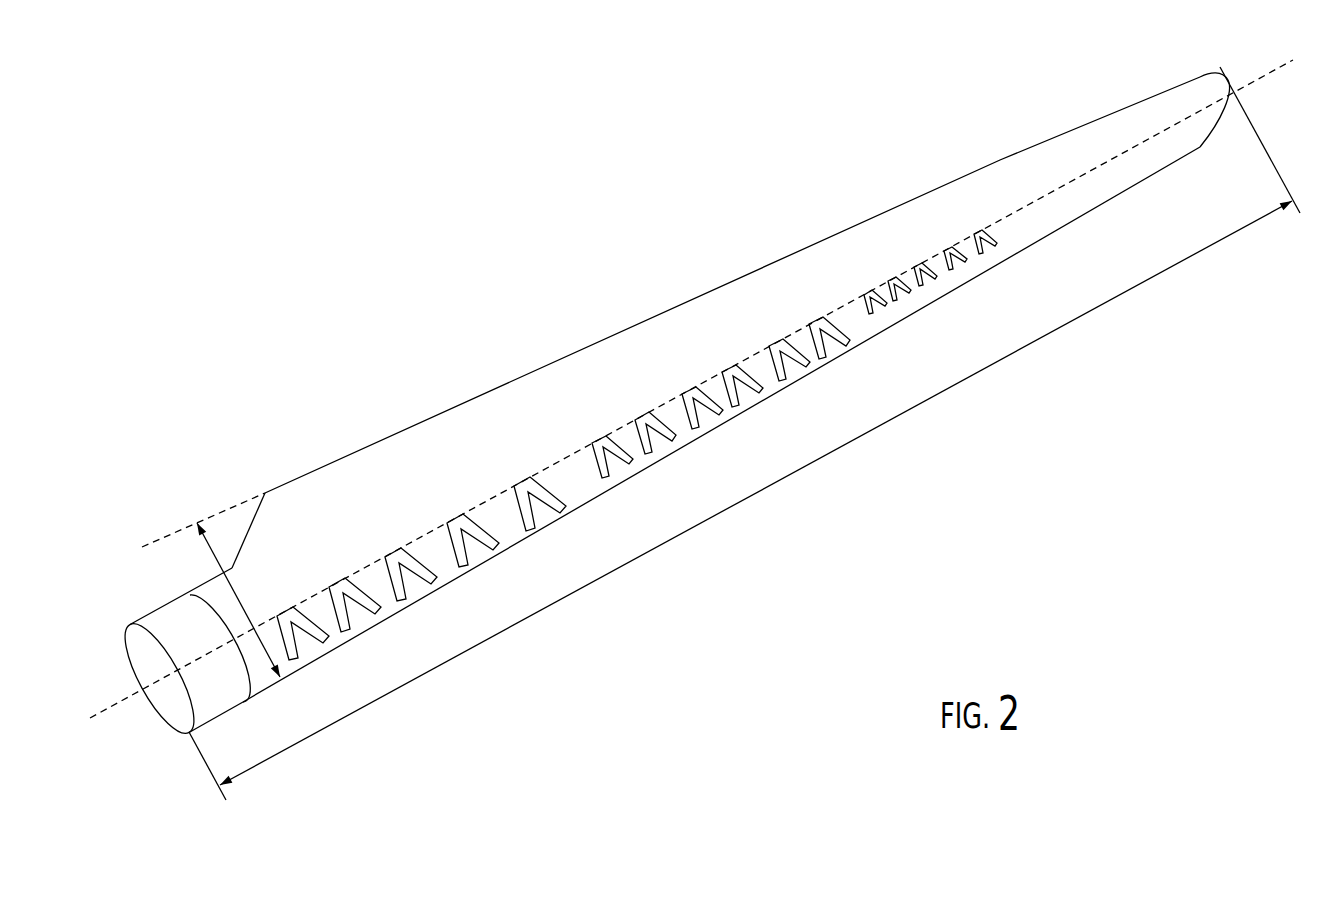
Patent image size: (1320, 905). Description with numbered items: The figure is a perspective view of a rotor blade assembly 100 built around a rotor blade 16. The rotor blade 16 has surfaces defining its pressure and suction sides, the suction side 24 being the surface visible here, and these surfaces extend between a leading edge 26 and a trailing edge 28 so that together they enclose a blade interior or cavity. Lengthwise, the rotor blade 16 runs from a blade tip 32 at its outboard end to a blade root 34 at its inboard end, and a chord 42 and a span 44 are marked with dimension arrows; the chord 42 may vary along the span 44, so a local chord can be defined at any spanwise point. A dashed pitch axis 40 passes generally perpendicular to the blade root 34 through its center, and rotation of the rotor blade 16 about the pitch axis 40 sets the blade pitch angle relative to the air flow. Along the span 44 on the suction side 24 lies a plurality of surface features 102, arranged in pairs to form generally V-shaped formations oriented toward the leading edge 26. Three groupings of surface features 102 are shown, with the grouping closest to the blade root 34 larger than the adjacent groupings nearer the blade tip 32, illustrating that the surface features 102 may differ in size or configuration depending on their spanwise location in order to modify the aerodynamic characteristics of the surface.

The rotor blade assembly 100 is at (452, 270).
The rotor blade 16 is at (451, 377).
The suction side 24 is at (374, 477).
The leading edge 26 is at (403, 613).
The trailing edge 28 is at (283, 484).
The blade tip 32 is at (1198, 83).
The blade root 34 is at (205, 690).
The pitch axis 40 is at (560, 463).
The chord 42 is at (232, 588).
The span 44 is at (790, 471).
The surface features 102 is at (510, 422).